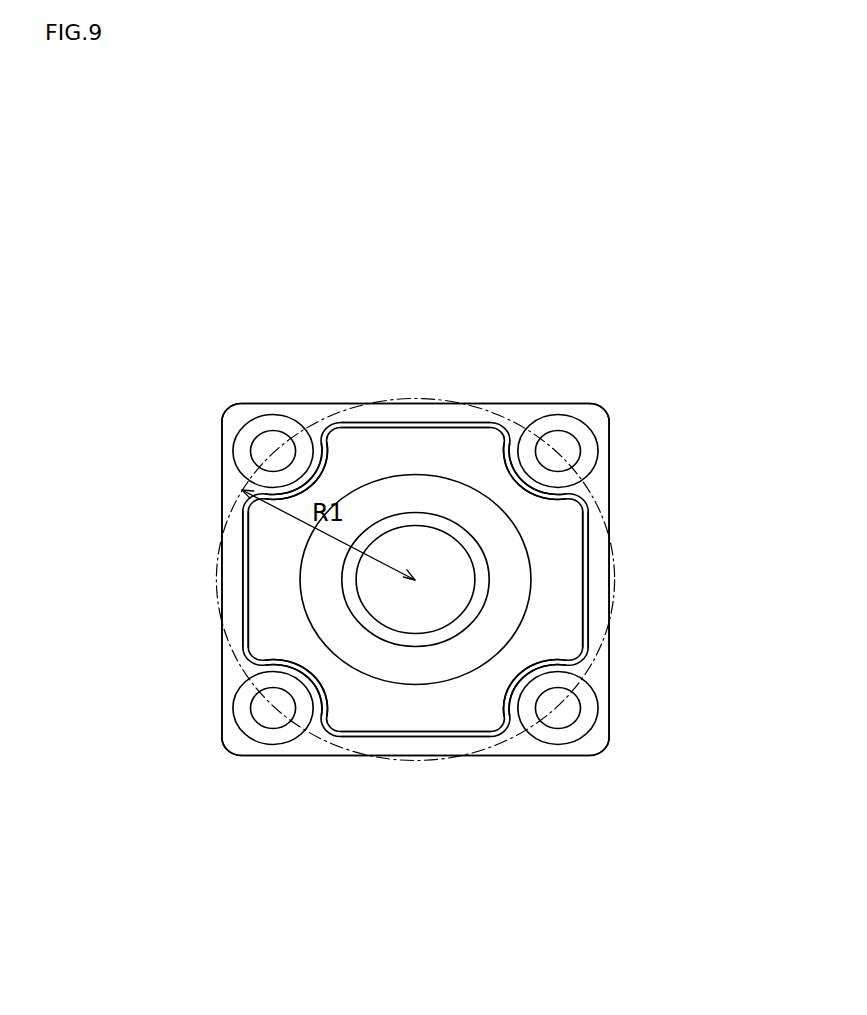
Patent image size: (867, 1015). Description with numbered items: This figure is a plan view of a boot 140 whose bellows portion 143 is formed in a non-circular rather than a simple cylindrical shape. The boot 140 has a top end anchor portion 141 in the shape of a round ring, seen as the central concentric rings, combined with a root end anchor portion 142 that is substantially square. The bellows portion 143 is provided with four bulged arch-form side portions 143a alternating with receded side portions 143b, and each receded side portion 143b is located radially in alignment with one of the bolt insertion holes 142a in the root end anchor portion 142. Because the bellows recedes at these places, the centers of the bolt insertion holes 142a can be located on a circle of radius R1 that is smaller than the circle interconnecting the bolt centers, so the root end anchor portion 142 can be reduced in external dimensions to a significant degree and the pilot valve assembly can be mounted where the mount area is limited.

The boot 140 is at (415, 467).
The top end anchor portion 141 is at (520, 586).
The root end anchor portion 142 is at (415, 483).
The bolt insertion hole 142a is at (408, 614).
The bellows portion 143 is at (415, 700).
The bulged arch-form side portion 143a is at (408, 593).
The receded side portion 143b is at (417, 573).